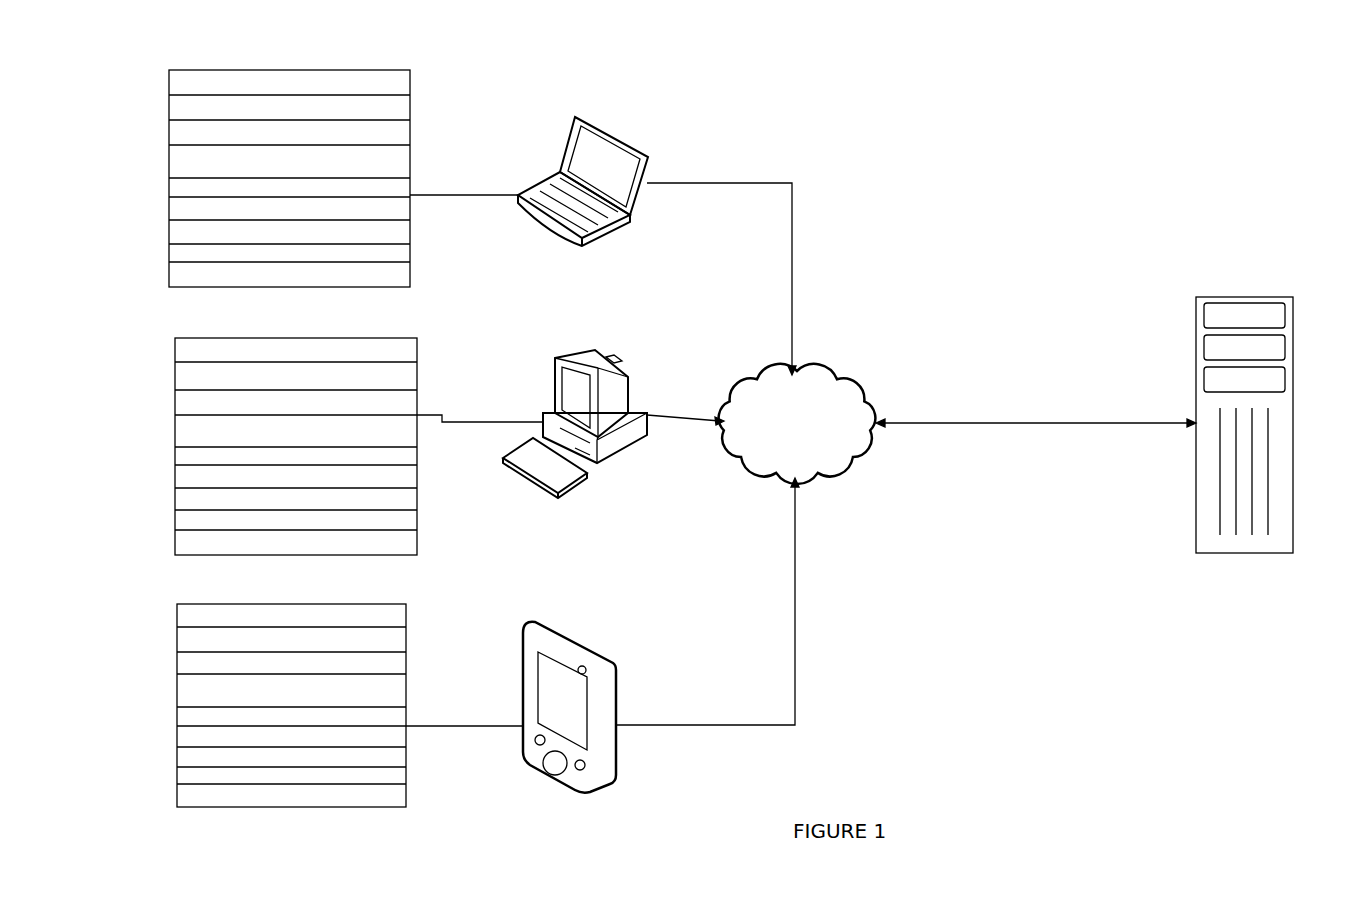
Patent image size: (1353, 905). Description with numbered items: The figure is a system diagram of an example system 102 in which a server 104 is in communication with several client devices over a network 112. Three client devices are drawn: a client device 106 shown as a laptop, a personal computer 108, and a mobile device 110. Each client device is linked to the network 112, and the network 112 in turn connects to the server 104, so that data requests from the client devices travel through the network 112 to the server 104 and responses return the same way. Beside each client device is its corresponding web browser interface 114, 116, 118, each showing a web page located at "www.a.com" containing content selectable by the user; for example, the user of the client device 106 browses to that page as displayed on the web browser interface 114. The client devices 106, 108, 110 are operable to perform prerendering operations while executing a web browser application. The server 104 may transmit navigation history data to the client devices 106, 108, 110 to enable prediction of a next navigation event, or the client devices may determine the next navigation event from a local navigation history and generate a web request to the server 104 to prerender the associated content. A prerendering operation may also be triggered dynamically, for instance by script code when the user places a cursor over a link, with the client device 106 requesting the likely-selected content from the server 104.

The system 102 is at (1155, 80).
The server 104 is at (1260, 295).
The client device 106 is at (613, 135).
The personal computer 108 is at (617, 367).
The mobile device 110 is at (590, 640).
The network 112 is at (785, 443).
The web browser interface 114 is at (378, 70).
The web browser interface 116 is at (407, 338).
The web browser interface 118 is at (406, 604).